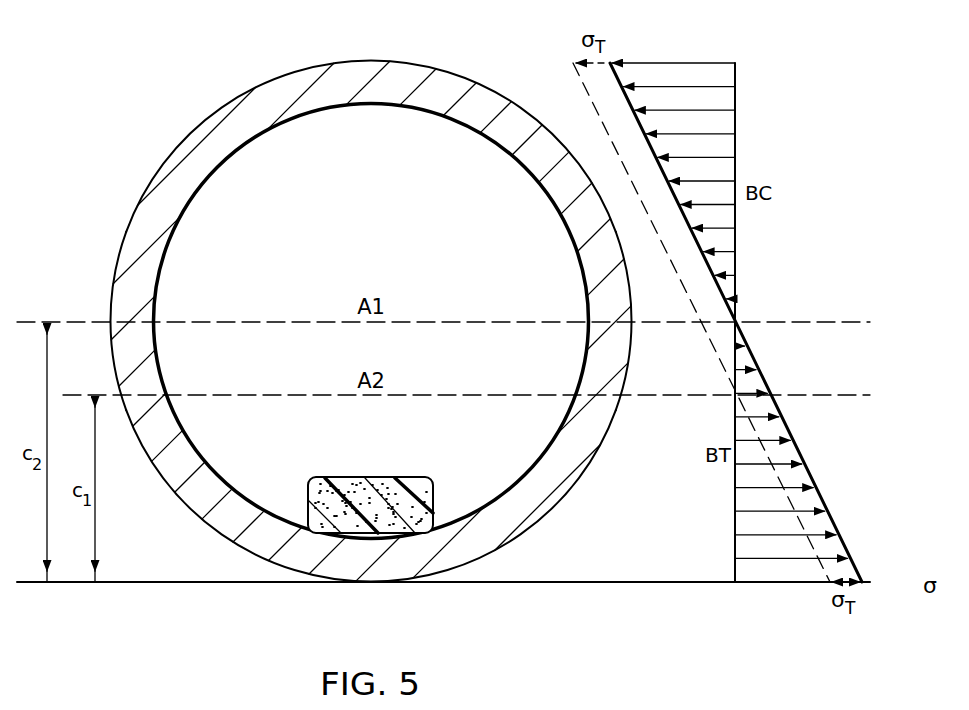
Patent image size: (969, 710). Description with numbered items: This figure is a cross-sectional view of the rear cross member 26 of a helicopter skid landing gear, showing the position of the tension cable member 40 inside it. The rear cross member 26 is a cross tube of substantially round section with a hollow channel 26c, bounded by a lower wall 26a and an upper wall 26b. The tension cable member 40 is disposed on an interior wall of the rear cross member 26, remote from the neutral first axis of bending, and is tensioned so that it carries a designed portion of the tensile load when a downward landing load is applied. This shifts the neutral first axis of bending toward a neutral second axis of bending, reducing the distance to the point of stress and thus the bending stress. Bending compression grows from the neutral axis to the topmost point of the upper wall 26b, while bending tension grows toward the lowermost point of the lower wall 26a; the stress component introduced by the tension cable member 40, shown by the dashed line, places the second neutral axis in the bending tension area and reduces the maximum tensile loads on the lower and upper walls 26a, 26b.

The rear cross member 26 is at (370, 323).
The lower wall 26a is at (392, 584).
The upper wall 26b is at (372, 61).
The hollow channel 26c is at (496, 144).
The tension cable member 40 is at (388, 474).